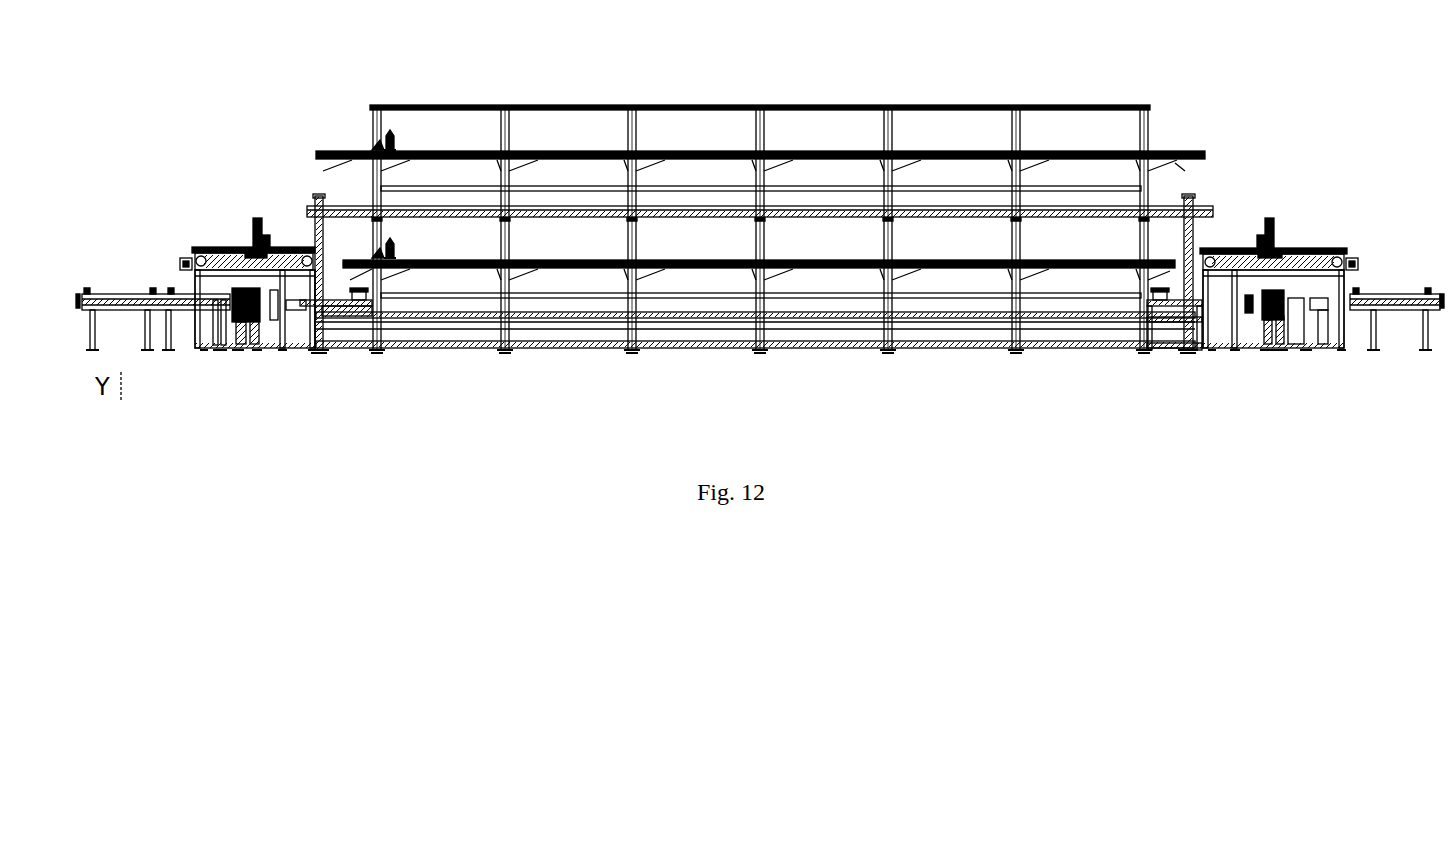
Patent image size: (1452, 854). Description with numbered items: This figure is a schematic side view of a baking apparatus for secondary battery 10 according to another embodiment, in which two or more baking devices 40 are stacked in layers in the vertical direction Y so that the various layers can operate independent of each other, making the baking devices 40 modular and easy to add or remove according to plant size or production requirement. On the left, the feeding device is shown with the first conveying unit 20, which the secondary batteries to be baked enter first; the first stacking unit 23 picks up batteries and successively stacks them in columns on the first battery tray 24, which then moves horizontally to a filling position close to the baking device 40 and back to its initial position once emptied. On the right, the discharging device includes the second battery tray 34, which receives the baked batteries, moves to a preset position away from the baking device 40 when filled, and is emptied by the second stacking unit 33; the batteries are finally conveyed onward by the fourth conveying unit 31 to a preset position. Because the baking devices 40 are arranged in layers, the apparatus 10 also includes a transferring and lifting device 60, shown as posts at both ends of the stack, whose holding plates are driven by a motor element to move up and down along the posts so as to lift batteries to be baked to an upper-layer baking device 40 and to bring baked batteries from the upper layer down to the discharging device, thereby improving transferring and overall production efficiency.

The baking apparatus for secondary battery 10 is at (785, 63).
The first conveying unit 20 is at (118, 293).
The first stacking unit 23 is at (252, 242).
The first battery tray 24 is at (356, 303).
The fourth conveying unit 31 is at (1400, 290).
The second stacking unit 33 is at (1283, 250).
The second battery tray 34 is at (1164, 300).
The baking device 40 is at (1077, 197).
The transferring and lifting device 60 is at (316, 232).